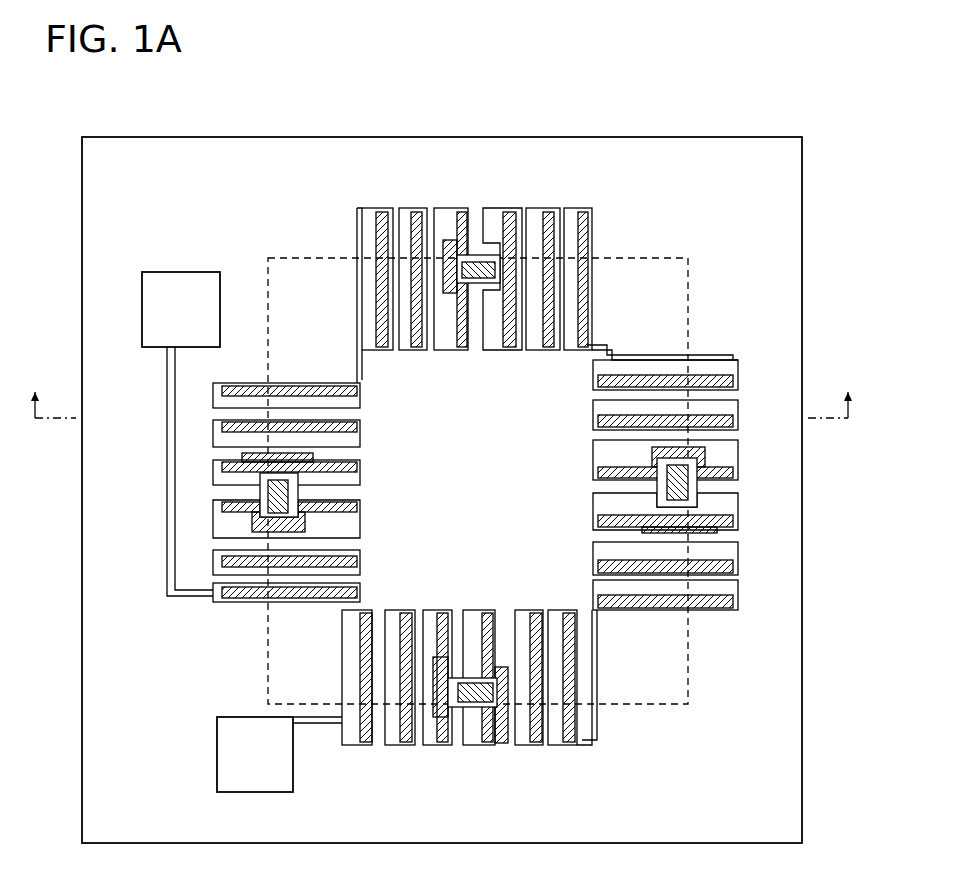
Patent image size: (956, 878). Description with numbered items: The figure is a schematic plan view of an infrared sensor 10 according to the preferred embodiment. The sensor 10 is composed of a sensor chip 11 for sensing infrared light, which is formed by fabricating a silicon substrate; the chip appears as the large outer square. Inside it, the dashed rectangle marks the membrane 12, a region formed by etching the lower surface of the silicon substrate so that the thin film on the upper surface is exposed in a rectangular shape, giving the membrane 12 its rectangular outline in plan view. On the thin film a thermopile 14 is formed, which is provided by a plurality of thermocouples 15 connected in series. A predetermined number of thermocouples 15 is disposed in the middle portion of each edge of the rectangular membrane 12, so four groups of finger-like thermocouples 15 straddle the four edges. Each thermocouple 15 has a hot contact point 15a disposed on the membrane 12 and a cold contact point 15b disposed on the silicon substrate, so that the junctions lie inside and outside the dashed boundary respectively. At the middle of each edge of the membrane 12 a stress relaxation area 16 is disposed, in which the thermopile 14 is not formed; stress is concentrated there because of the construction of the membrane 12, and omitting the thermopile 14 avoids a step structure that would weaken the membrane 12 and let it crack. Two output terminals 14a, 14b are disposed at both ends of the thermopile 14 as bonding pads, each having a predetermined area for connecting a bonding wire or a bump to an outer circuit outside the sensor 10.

The sensor 10 is at (744, 128).
The sensor chip 11 is at (726, 844).
The membrane 12 is at (650, 272).
The thermopile 14 is at (384, 207).
The output terminal 14a is at (179, 272).
The output terminal 14b is at (293, 780).
The thermocouple 15 is at (599, 552).
The hot contact point 15a is at (597, 567).
The cold contact point 15b is at (739, 605).
The stress relaxation area 16 is at (473, 256).